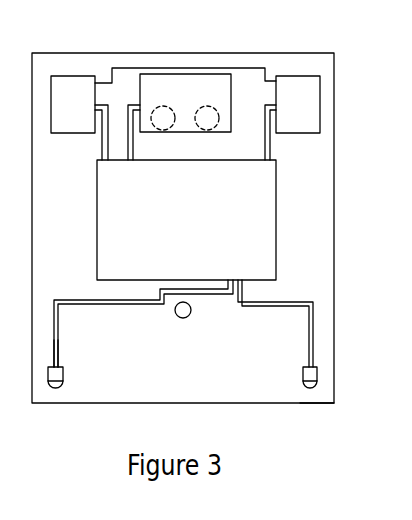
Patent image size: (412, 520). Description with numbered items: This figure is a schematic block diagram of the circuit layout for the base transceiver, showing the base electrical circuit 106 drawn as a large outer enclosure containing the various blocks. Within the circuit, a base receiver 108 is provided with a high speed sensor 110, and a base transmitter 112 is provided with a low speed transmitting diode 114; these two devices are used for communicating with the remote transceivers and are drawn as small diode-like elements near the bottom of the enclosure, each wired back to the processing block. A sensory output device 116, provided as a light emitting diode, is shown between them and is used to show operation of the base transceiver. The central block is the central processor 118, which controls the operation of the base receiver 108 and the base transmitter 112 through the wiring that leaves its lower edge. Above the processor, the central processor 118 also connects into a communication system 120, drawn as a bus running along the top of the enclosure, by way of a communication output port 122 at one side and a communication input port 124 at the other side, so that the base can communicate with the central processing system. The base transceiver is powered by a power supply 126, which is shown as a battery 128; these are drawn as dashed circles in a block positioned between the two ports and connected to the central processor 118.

The base electrical circuit 106 is at (173, 53).
The base receiver 108 is at (45, 380).
The high speed sensor 110 is at (63, 372).
The base transmitter 112 is at (317, 372).
The low speed transmitting diode 114 is at (318, 385).
The sensory output device 116 is at (186, 318).
The central processor 118 is at (276, 243).
The communication system 120 is at (243, 68).
The communication output port 122 is at (320, 125).
The communication input port 124 is at (58, 76).
The power supply 126 is at (163, 130).
The battery 128 is at (215, 126).